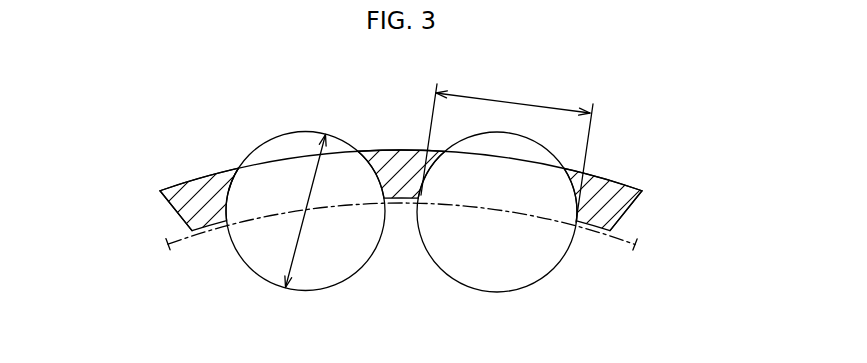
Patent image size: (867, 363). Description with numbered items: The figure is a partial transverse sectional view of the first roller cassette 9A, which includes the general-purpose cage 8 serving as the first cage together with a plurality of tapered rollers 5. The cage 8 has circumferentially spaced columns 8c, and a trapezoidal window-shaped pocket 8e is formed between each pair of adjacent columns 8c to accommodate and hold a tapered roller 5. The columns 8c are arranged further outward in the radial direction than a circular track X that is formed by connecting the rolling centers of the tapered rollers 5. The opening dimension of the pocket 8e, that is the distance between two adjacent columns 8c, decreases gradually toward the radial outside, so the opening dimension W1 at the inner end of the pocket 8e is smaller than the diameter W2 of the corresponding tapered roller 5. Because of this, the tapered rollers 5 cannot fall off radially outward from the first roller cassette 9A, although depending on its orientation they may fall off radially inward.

The general-purpose cage 8 is at (171, 178).
The column 8c is at (202, 190).
The pocket 8e is at (229, 190).
The tapered roller 5 is at (345, 282).
The first roller cassette 9A is at (653, 122).
The circular track X is at (598, 240).
The opening dimension of the inner end of the pocket W1 is at (507, 152).
The diameter of the tapered roller W2 is at (312, 211).